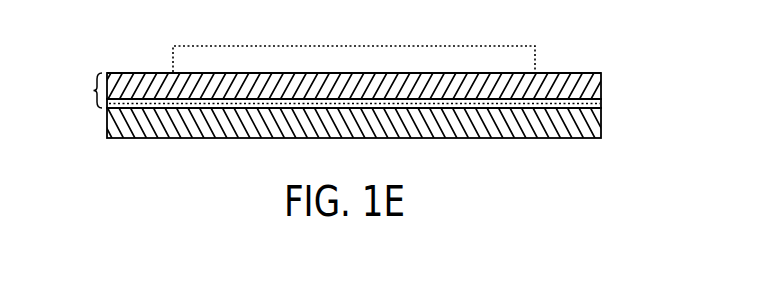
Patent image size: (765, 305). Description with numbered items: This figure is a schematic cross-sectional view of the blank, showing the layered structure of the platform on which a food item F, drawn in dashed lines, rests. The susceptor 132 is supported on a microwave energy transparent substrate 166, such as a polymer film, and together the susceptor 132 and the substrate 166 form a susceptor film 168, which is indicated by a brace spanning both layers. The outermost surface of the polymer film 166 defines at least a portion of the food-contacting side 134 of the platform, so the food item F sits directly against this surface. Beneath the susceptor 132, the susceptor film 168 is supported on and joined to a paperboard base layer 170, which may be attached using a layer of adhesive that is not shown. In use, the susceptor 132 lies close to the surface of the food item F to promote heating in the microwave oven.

The food-contacting side 134 is at (127, 72).
The susceptor film 168 is at (77, 90).
The microwave energy transparent substrate 166 is at (597, 85).
The susceptor 132 is at (597, 104).
The paperboard base layer 170 is at (595, 126).
The food item F is at (535, 47).